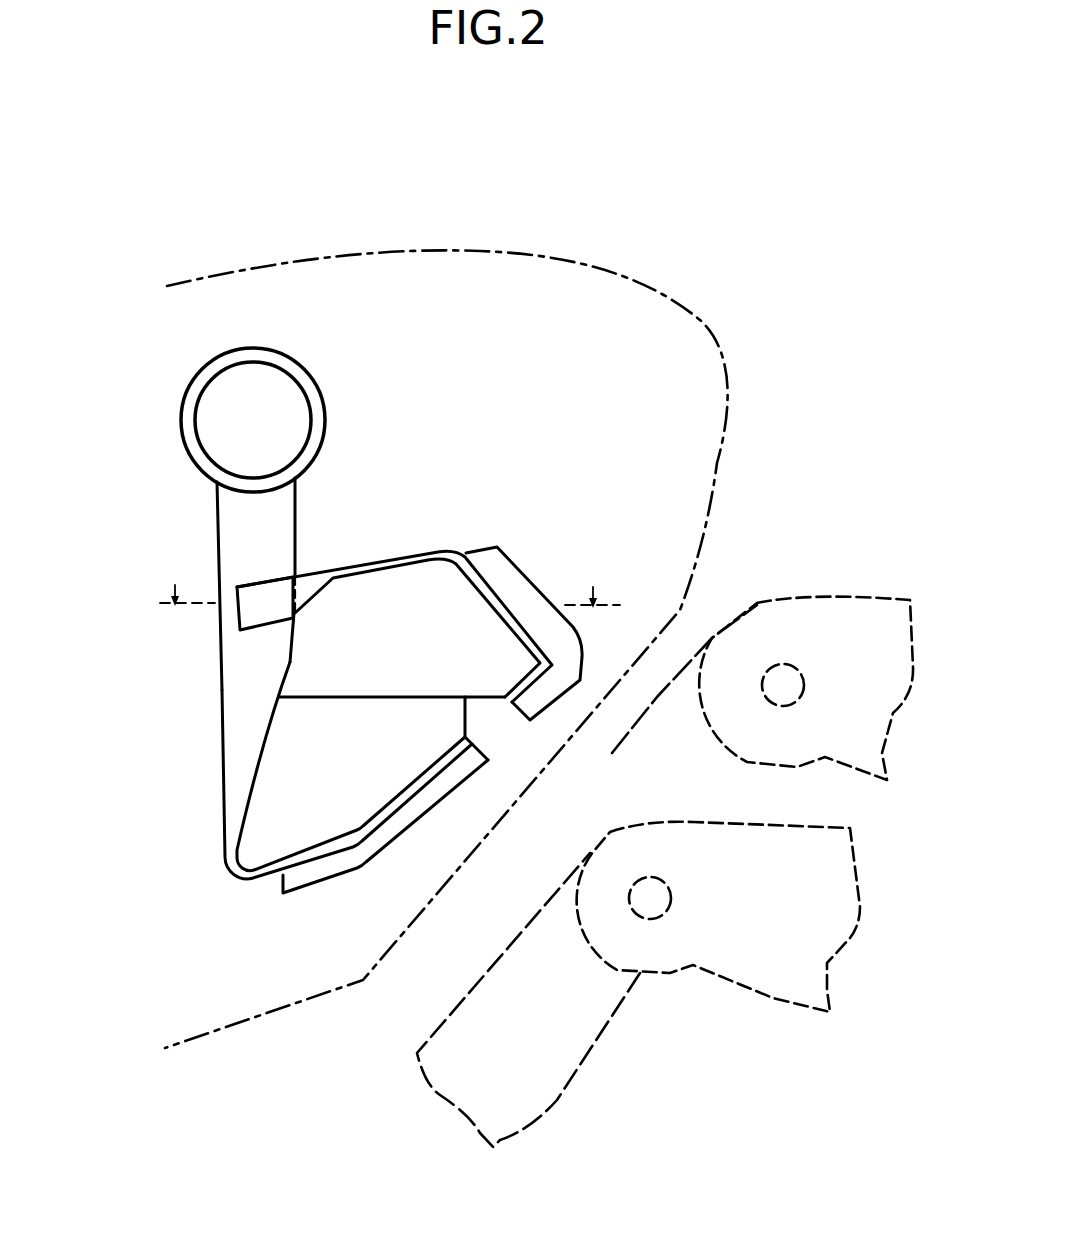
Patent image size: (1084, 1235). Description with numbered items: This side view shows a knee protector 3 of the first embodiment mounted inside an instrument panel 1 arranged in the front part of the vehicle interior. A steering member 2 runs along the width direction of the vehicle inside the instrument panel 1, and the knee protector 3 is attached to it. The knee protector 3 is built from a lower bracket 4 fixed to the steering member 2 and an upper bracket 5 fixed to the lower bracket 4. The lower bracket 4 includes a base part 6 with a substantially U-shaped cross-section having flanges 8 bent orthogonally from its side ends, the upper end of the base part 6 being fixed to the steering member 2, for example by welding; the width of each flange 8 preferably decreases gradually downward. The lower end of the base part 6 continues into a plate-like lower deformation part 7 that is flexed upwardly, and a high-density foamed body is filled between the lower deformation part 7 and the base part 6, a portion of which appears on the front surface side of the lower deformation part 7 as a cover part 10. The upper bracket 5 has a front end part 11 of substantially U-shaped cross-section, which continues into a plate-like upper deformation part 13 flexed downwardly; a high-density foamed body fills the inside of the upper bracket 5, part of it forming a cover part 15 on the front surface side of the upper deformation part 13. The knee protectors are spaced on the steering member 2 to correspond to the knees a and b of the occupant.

The instrument panel 1 is at (443, 251).
The steering member 2 is at (183, 403).
The knee protector 3 is at (553, 418).
The lower bracket 4 is at (110, 665).
The upper bracket 5 is at (493, 437).
The base part 6 is at (222, 688).
The lower deformation part 7 is at (315, 847).
The flange 8 is at (250, 513).
The cover part 10 is at (395, 843).
The front end part 11 is at (265, 593).
The upper deformation part 13 is at (437, 548).
The cover part 15 is at (543, 587).
The knee a is at (608, 830).
The knee b is at (755, 603).